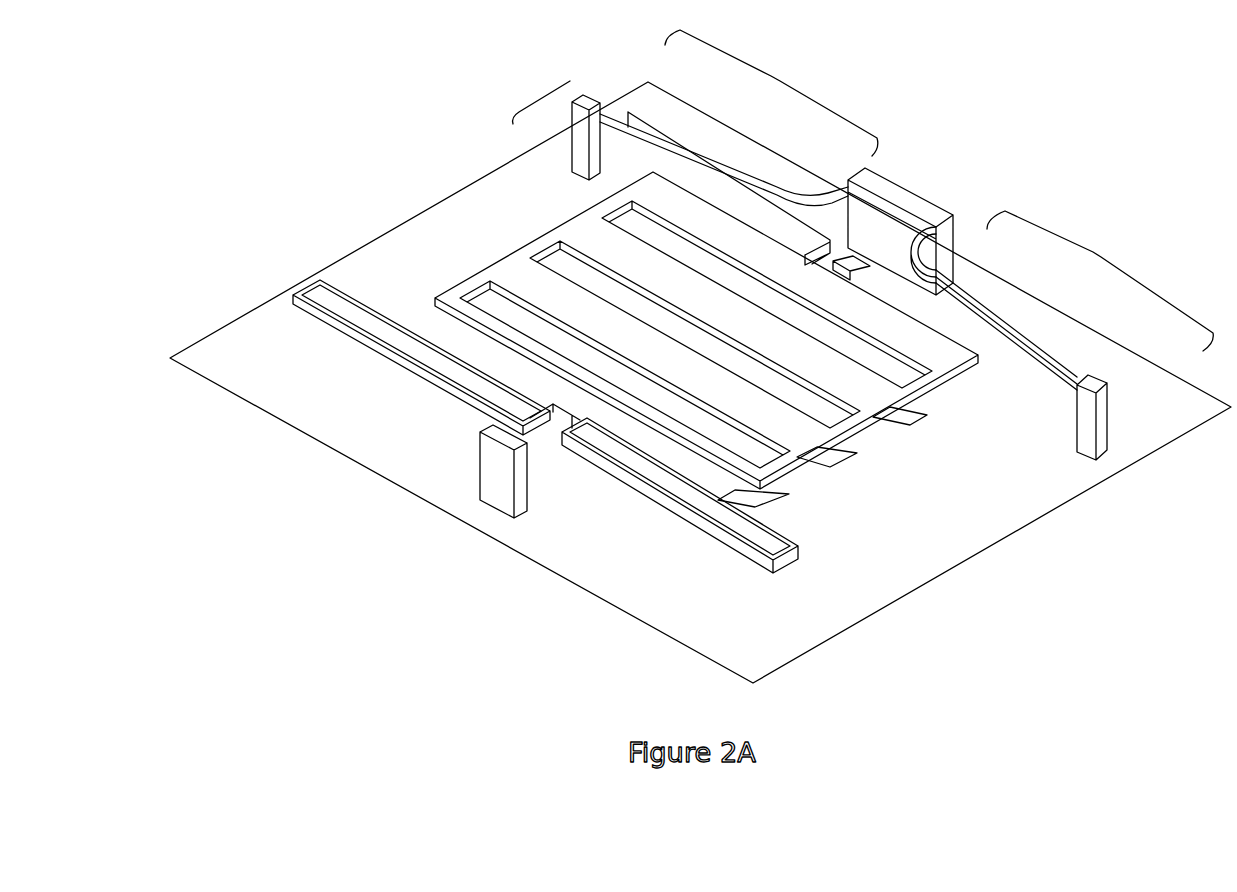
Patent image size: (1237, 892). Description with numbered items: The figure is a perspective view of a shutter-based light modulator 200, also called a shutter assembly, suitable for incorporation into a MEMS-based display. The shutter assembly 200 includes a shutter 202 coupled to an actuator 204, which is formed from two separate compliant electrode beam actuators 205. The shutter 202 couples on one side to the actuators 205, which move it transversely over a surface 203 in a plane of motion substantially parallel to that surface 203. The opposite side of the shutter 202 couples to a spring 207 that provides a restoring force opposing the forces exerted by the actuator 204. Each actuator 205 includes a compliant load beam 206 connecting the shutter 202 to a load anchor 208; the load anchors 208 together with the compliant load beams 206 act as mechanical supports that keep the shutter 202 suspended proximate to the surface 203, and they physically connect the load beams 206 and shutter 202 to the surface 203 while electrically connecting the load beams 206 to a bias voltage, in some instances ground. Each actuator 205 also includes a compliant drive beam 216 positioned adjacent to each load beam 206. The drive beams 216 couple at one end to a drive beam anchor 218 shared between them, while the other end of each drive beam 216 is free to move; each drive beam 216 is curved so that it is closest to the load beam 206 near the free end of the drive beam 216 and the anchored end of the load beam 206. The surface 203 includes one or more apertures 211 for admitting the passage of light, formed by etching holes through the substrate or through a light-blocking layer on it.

The shutter-based light modulator 200 is at (700, 355).
The shutter 202 is at (715, 305).
The surface 203 is at (783, 642).
The actuator 204 is at (570, 81).
The compliant electrode beam actuator 205 is at (780, 81).
The compliant load beam 206 is at (642, 165).
The spring 207 is at (404, 375).
The load anchor 208 is at (578, 162).
The aperture 211 is at (790, 494).
The compliant drive beam 216 is at (735, 154).
The drive beam anchor 218 is at (914, 193).